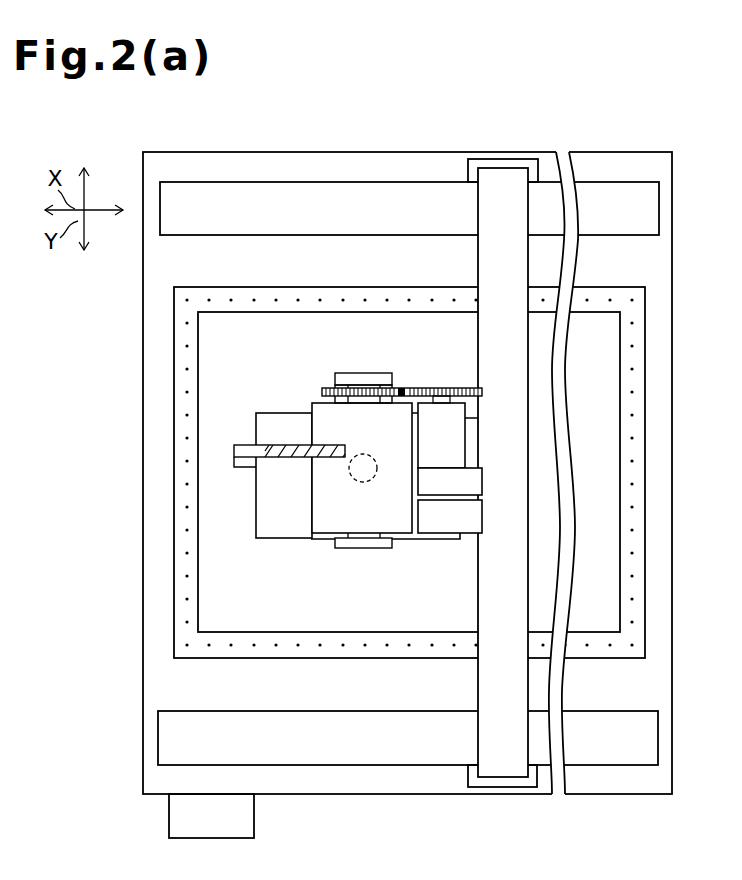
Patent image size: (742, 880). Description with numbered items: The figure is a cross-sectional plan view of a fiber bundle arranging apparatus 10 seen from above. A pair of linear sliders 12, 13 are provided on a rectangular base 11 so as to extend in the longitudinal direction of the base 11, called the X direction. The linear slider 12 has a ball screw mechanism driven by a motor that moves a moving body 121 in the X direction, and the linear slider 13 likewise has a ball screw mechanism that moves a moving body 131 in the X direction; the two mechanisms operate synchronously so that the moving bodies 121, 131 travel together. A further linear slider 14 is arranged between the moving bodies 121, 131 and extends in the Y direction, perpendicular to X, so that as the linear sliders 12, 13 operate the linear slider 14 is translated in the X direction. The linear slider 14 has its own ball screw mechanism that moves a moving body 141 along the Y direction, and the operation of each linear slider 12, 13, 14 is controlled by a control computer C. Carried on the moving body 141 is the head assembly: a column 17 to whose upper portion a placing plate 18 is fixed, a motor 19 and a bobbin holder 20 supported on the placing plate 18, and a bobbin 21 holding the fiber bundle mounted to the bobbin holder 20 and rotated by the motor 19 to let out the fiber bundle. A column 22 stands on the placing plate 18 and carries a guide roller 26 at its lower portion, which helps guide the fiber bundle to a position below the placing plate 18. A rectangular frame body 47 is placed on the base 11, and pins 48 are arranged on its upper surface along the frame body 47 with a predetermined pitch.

The surface mounting apparatus 10 is at (634, 135).
The base 11 is at (648, 262).
The linear slider 12 is at (648, 208).
The linear slider 13 is at (647, 742).
The linear slider 14 is at (487, 693).
The column 17 is at (378, 474).
The placing plate 18 is at (265, 517).
The motor 19 is at (457, 413).
The bobbin holder 20 is at (360, 546).
The bobbin 21 is at (323, 527).
The column 22 is at (292, 443).
The guide roller 26 is at (230, 462).
The frame body 47 is at (636, 355).
The pins 48 is at (208, 298).
The moving body 121 is at (468, 172).
The moving body 131 is at (468, 777).
The moving body 141 is at (470, 442).
The control computer C is at (245, 815).